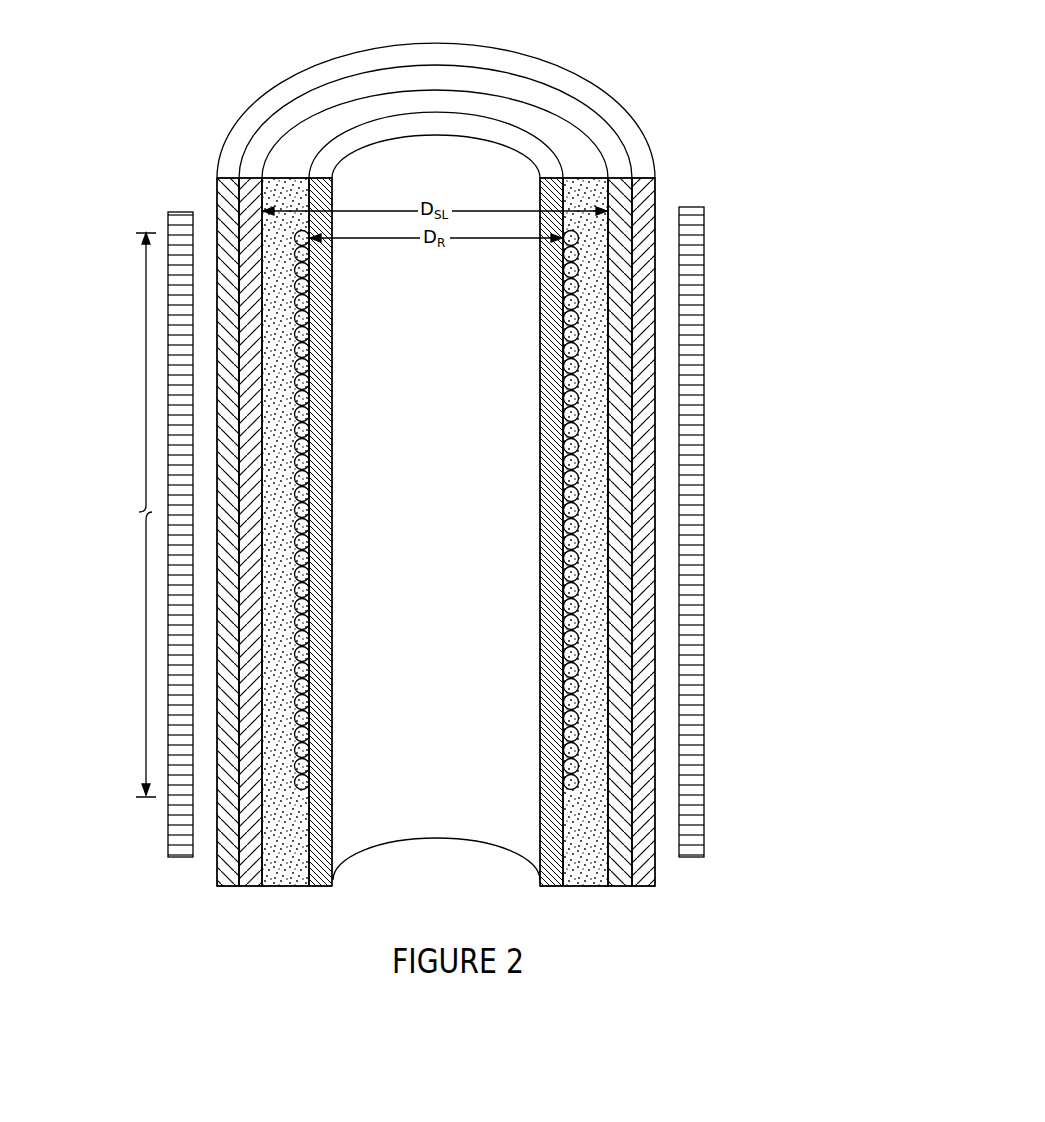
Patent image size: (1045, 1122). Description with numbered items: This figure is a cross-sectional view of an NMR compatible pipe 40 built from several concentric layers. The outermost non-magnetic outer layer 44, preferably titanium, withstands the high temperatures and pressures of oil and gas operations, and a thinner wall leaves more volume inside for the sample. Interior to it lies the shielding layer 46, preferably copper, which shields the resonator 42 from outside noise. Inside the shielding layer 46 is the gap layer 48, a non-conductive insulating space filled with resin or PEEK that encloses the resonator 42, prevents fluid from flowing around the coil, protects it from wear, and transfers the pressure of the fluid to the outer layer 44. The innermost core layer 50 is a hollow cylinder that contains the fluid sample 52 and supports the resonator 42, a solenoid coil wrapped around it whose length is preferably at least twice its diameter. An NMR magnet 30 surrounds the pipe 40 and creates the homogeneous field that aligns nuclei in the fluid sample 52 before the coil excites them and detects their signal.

The NMR magnet 30 is at (693, 222).
The pipe 40 is at (133, 392).
The resonator 42 is at (567, 563).
The outer layer 44 is at (637, 142).
The shielding layer 46 is at (575, 110).
The gap layer 48 is at (507, 112).
The core layer 50 is at (328, 159).
The fluid sample 52 is at (447, 440).